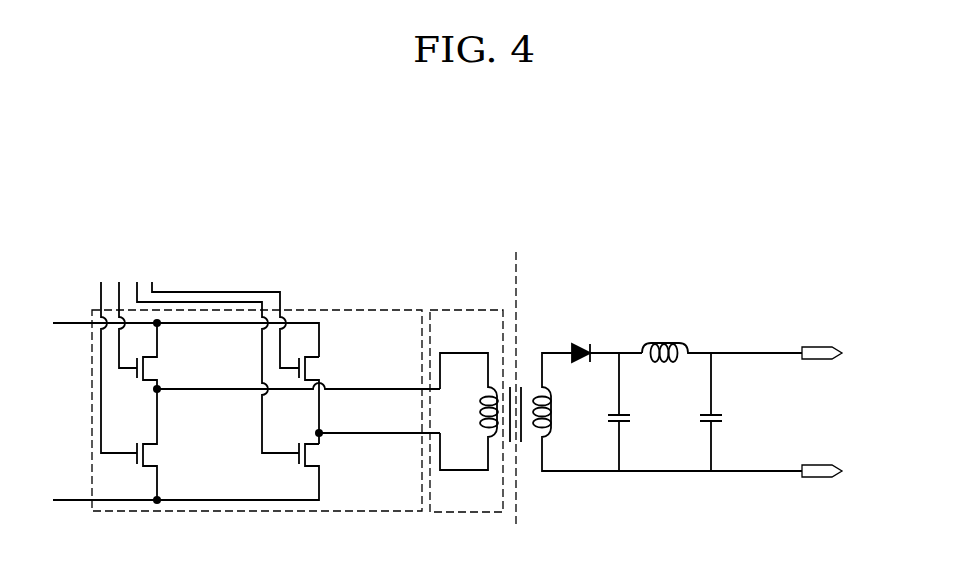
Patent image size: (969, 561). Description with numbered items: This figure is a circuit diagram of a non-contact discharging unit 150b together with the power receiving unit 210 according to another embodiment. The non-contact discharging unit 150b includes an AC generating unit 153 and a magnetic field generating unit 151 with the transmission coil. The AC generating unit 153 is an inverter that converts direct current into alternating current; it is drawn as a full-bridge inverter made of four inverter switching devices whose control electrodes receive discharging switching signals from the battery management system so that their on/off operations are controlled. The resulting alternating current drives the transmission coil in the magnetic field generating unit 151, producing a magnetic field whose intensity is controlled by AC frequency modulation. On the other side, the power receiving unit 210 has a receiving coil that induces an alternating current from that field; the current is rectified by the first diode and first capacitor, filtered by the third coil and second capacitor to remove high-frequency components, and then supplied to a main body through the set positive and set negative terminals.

The non-contact discharging unit 150b is at (410, 247).
The AC generating unit 153 is at (329, 310).
The magnetic field generating unit 151 is at (472, 310).
The power receiving unit 210 is at (700, 247).